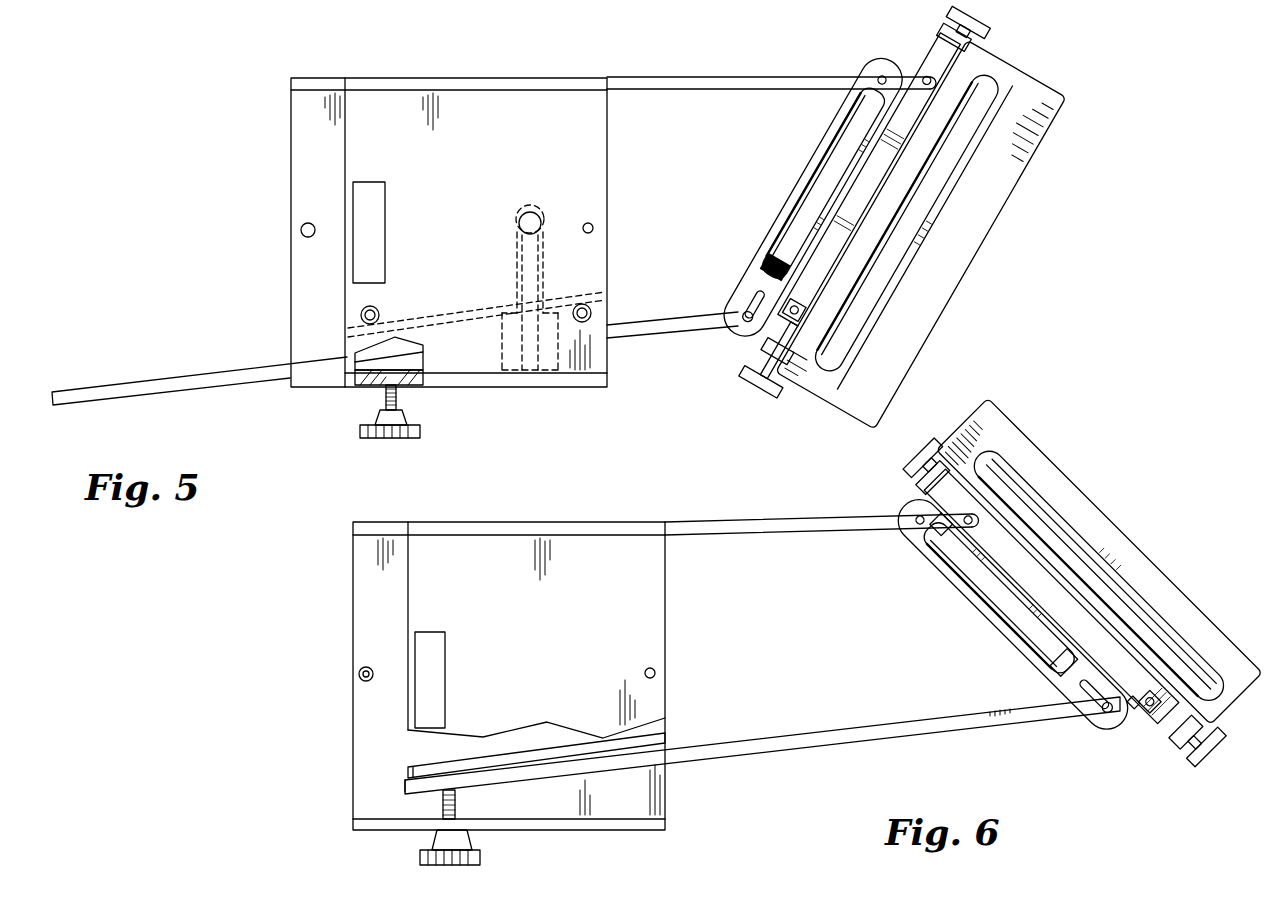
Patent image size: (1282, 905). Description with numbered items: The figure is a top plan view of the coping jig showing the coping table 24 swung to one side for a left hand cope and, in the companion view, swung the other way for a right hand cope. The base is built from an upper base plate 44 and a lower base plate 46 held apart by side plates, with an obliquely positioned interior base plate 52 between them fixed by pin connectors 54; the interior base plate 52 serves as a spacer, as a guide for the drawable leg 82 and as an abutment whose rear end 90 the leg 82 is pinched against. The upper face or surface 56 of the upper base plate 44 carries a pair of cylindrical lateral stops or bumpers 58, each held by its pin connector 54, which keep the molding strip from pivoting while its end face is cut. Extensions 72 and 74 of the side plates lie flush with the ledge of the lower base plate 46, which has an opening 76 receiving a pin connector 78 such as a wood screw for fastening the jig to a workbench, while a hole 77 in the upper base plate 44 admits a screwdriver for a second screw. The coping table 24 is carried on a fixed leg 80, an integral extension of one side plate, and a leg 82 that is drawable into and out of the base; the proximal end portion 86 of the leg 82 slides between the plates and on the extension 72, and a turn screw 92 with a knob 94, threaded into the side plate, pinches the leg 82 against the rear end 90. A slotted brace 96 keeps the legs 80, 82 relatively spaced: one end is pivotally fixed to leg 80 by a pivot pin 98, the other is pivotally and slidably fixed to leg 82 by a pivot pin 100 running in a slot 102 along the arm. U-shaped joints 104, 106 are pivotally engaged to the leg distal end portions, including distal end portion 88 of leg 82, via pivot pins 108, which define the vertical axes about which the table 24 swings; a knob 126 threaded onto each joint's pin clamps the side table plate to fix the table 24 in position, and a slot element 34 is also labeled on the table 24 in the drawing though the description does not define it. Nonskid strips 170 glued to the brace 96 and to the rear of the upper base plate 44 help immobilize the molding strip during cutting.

In FIG. 5, the coping table 24 is at (1042, 150).
In FIG. 6, the coping table 24 is at (1104, 515).
In FIG. 5, the slot in base plate 34 is at (885, 268).
In FIG. 6, the slot in base plate 34 is at (1101, 572).
In FIG. 6, the upper base plate 44 is at (408, 580).
In FIG. 6, the lower base plate 46 is at (353, 635).
In FIG. 6, the interior base plate 52 is at (410, 766).
In FIG. 5, the pin connectors 54 is at (591, 311).
In FIG. 5, the upper face or surface 56 is at (453, 181).
In FIG. 6, the upper face or surface 56 is at (536, 683).
In FIG. 5, the lateral stops or bumpers 58 is at (361, 314).
In FIG. 5, the extension of side base plate 72 is at (312, 382).
In FIG. 5, the extension of side base plate 74 is at (320, 80).
In FIG. 5, the opening 76 is at (301, 230).
In FIG. 5, the hole 77 is at (590, 223).
In FIG. 6, the hole 77 is at (650, 668).
In FIG. 6, the pin connector 78 is at (358, 675).
In FIG. 5, the leg 80 is at (771, 83).
In FIG. 6, the leg 80 is at (720, 520).
In FIG. 5, the leg 82 is at (248, 386).
In FIG. 6, the leg 82 is at (756, 760).
In FIG. 6, the proximal end portion 86 is at (633, 770).
In FIG. 6, the distal end portion 88 is at (1020, 720).
In FIG. 6, the rear end 90 is at (404, 785).
In FIG. 6, the turn screw 92 is at (455, 802).
In FIG. 6, the handle or knob 94 is at (482, 862).
In FIG. 5, the arm or slotted brace 96 is at (800, 192).
In FIG. 6, the arm or slotted brace 96 is at (990, 620).
In FIG. 5, the pivot pin 98 is at (878, 70).
In FIG. 6, the pivot pin 98 is at (919, 519).
In FIG. 5, the pivot pin 100 is at (743, 315).
In FIG. 6, the pivot pin 100 is at (1120, 705).
In FIG. 5, the slot 102 is at (756, 292).
In FIG. 6, the slot 102 is at (1094, 694).
In FIG. 5, the U-shaped joint 104 is at (932, 55).
In FIG. 6, the U-shaped joint 104 is at (1048, 593).
In FIG. 6, the U-shaped joint 106 is at (1162, 722).
In FIG. 5, the pivot pins 108 is at (926, 76).
In FIG. 6, the pivot pins 108 is at (940, 543).
In FIG. 5, the handle or knob 126 is at (990, 22).
In FIG. 6, the handle or knob 126 is at (905, 465).
In FIG. 5, the nonskid strips 170 is at (353, 208).
In FIG. 6, the nonskid strips 170 is at (438, 632).